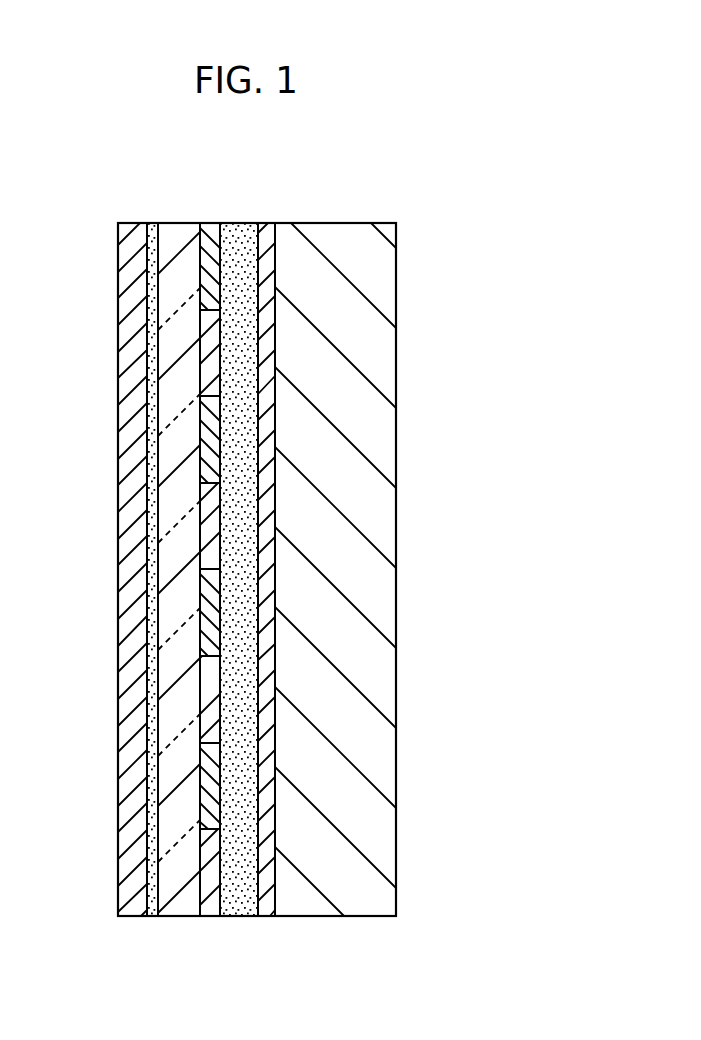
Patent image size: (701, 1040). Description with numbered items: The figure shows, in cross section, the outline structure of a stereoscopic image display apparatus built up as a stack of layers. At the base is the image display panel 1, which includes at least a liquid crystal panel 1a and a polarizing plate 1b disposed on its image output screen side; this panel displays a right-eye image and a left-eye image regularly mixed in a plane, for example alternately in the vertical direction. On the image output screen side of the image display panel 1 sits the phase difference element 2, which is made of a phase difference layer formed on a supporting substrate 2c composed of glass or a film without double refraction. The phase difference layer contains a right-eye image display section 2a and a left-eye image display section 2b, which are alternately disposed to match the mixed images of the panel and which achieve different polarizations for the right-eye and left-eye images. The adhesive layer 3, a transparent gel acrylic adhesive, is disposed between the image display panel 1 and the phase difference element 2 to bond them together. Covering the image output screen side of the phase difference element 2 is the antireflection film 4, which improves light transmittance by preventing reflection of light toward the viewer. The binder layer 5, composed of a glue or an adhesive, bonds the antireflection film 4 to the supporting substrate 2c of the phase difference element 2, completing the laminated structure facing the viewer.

The image display panel 1 is at (333, 968).
The liquid crystal panel 1a is at (316, 907).
The polarizing plate 1b is at (266, 907).
The phase difference element 2 is at (74, 248).
The right-eye image display section 2a is at (207, 325).
The left-eye image display section 2b is at (207, 288).
The supporting substrate 2c is at (173, 260).
The adhesive layer 3 is at (233, 900).
The antireflection film 4 is at (127, 910).
The binder layer 5 is at (151, 910).